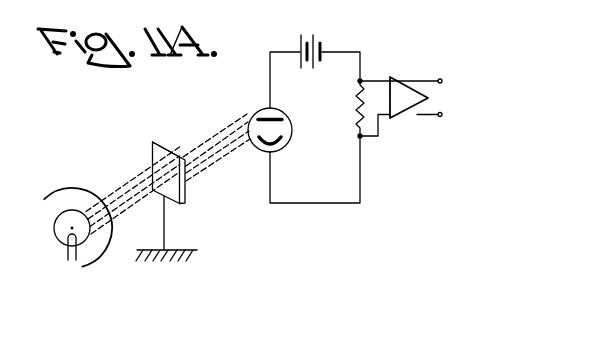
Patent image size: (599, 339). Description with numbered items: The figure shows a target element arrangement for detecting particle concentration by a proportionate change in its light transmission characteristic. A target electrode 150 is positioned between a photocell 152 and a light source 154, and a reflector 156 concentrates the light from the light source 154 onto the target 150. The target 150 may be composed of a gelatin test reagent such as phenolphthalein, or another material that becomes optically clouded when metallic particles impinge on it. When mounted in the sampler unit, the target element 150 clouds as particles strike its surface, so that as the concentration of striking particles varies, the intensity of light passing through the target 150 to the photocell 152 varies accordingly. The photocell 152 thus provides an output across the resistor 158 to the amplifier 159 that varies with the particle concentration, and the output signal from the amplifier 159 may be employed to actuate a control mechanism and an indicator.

The target electrode 150 is at (158, 141).
The photocell 152 is at (292, 131).
The light source 154 is at (70, 210).
The reflector 156 is at (50, 266).
The resistor 158 is at (358, 97).
The amplifier 159 is at (398, 77).